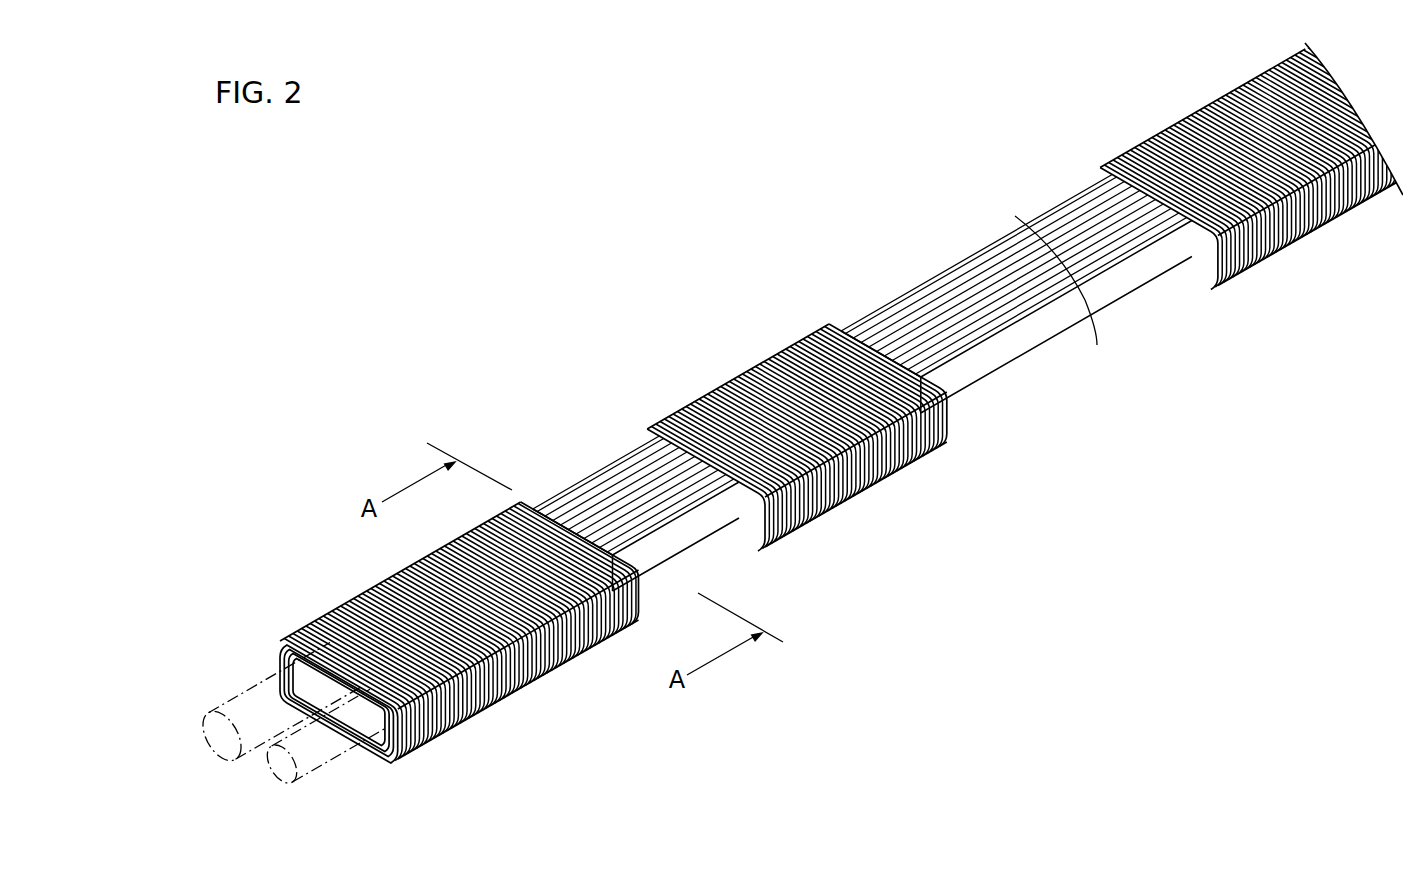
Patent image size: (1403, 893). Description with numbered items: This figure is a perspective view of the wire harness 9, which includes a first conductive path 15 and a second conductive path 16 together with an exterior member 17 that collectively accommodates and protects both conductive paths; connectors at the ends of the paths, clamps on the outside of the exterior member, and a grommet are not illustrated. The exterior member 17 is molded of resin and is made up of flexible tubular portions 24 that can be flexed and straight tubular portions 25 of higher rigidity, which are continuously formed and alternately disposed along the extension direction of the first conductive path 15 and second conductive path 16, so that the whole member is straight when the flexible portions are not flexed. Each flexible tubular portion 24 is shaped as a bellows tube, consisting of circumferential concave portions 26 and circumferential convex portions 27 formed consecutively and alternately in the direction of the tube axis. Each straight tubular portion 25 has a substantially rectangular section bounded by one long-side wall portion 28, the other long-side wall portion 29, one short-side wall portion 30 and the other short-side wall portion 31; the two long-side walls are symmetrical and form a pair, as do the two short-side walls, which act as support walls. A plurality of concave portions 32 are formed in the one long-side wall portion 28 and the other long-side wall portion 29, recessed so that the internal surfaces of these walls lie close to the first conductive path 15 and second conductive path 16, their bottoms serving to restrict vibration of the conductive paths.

The wire harness 9 is at (580, 266).
The first conductive path 15 is at (250, 700).
The second conductive path 16 is at (332, 745).
The exterior member 17 is at (718, 393).
The flexible tubular portion 24 is at (304, 622).
The straight tubular portion 25 is at (592, 470).
The circumferential concave portion 26 is at (534, 680).
The circumferential convex portion 27 is at (527, 690).
The one long-side wall portion 28 is at (698, 518).
The other long-side wall portion 29 is at (705, 562).
The one short-side wall portion 30 is at (657, 580).
The other short-side wall portion 31 is at (548, 488).
The concave portion 32 is at (657, 493).